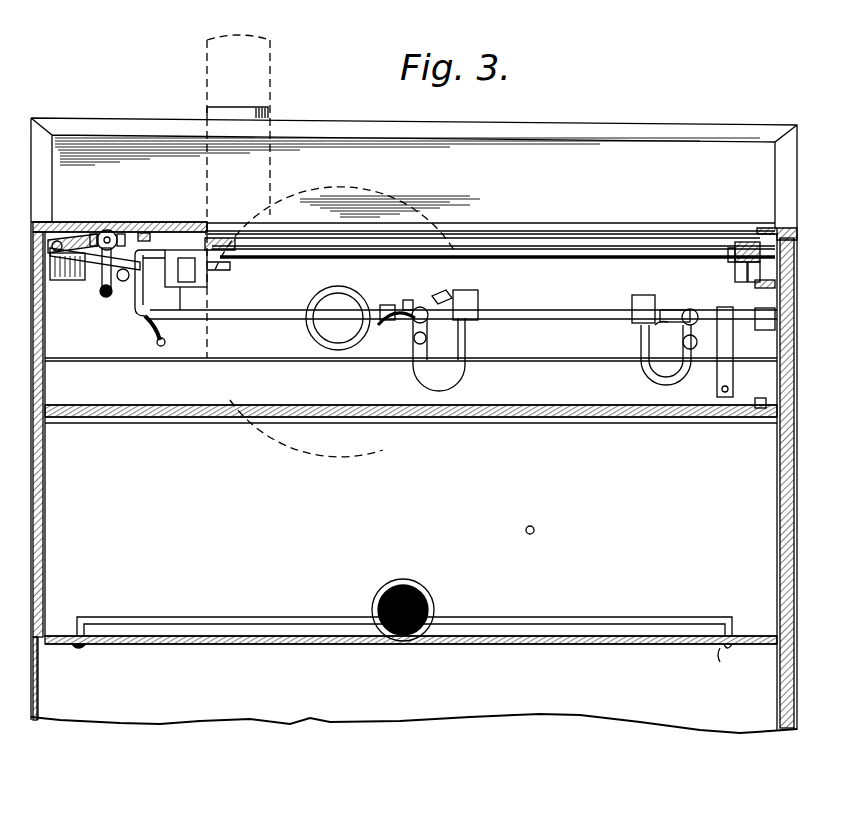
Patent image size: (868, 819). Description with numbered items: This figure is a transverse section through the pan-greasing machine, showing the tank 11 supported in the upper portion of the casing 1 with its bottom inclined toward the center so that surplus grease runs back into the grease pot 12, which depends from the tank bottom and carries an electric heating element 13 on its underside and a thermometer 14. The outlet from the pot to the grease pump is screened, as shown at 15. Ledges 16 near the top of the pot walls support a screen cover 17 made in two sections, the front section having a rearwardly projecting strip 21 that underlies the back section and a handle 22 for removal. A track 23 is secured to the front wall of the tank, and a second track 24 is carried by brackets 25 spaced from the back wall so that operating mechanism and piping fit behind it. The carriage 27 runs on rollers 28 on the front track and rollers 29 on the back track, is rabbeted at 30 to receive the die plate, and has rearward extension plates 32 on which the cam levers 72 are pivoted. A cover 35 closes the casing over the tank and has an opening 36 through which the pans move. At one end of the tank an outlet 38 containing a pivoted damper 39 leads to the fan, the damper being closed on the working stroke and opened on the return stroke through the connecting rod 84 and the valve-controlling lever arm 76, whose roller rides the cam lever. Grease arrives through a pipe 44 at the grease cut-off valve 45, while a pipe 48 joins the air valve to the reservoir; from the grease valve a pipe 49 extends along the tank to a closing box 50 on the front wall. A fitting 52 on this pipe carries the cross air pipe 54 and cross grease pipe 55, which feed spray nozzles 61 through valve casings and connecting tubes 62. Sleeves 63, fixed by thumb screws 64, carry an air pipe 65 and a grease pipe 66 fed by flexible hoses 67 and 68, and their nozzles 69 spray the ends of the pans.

The cabinet 1 is at (796, 712).
The tank 11 is at (411, 375).
The grease pot 12 is at (411, 582).
The electric heating element 13 is at (606, 620).
The thermometer 14 is at (535, 527).
The screen 15 is at (420, 598).
The ledges 16 is at (680, 420).
The cover 17 is at (228, 405).
The strip 21 is at (440, 414).
The handle 22 is at (767, 400).
The track 23 is at (797, 292).
The track 24 is at (182, 310).
The brackets 25 is at (72, 282).
The carriage 27 is at (570, 248).
The rollers 28 is at (762, 272).
The rollers 29 is at (207, 285).
The rabbet 30 is at (742, 242).
The extensions or plates 32 is at (230, 266).
The cover 35 is at (175, 222).
The opening 36 is at (486, 224).
The outlet 38 is at (335, 350).
The damper 39 is at (318, 340).
The pipe 44 is at (104, 300).
The grease cut-off valve 45 is at (113, 230).
The pipe 48 is at (137, 318).
The pipe 49 is at (290, 308).
The box 50 is at (776, 317).
The fitting 52 is at (693, 308).
The cross air pipe 54 is at (658, 328).
The cross grease pipe 55 is at (733, 340).
The spray nozzles 61 is at (632, 300).
The connecting tubes 62 is at (652, 375).
The sleeves 63 is at (386, 304).
The thumb screws 64 is at (448, 296).
The air pipe 65 is at (410, 300).
The grease pipe 66 is at (417, 345).
The flexible hose 67 is at (380, 330).
The flexible hose 68 is at (163, 346).
The nozzles 69 is at (480, 304).
The cam lever 72 is at (215, 238).
The valve-controlling lever arm 76 is at (148, 232).
The connecting rod 84 is at (80, 232).